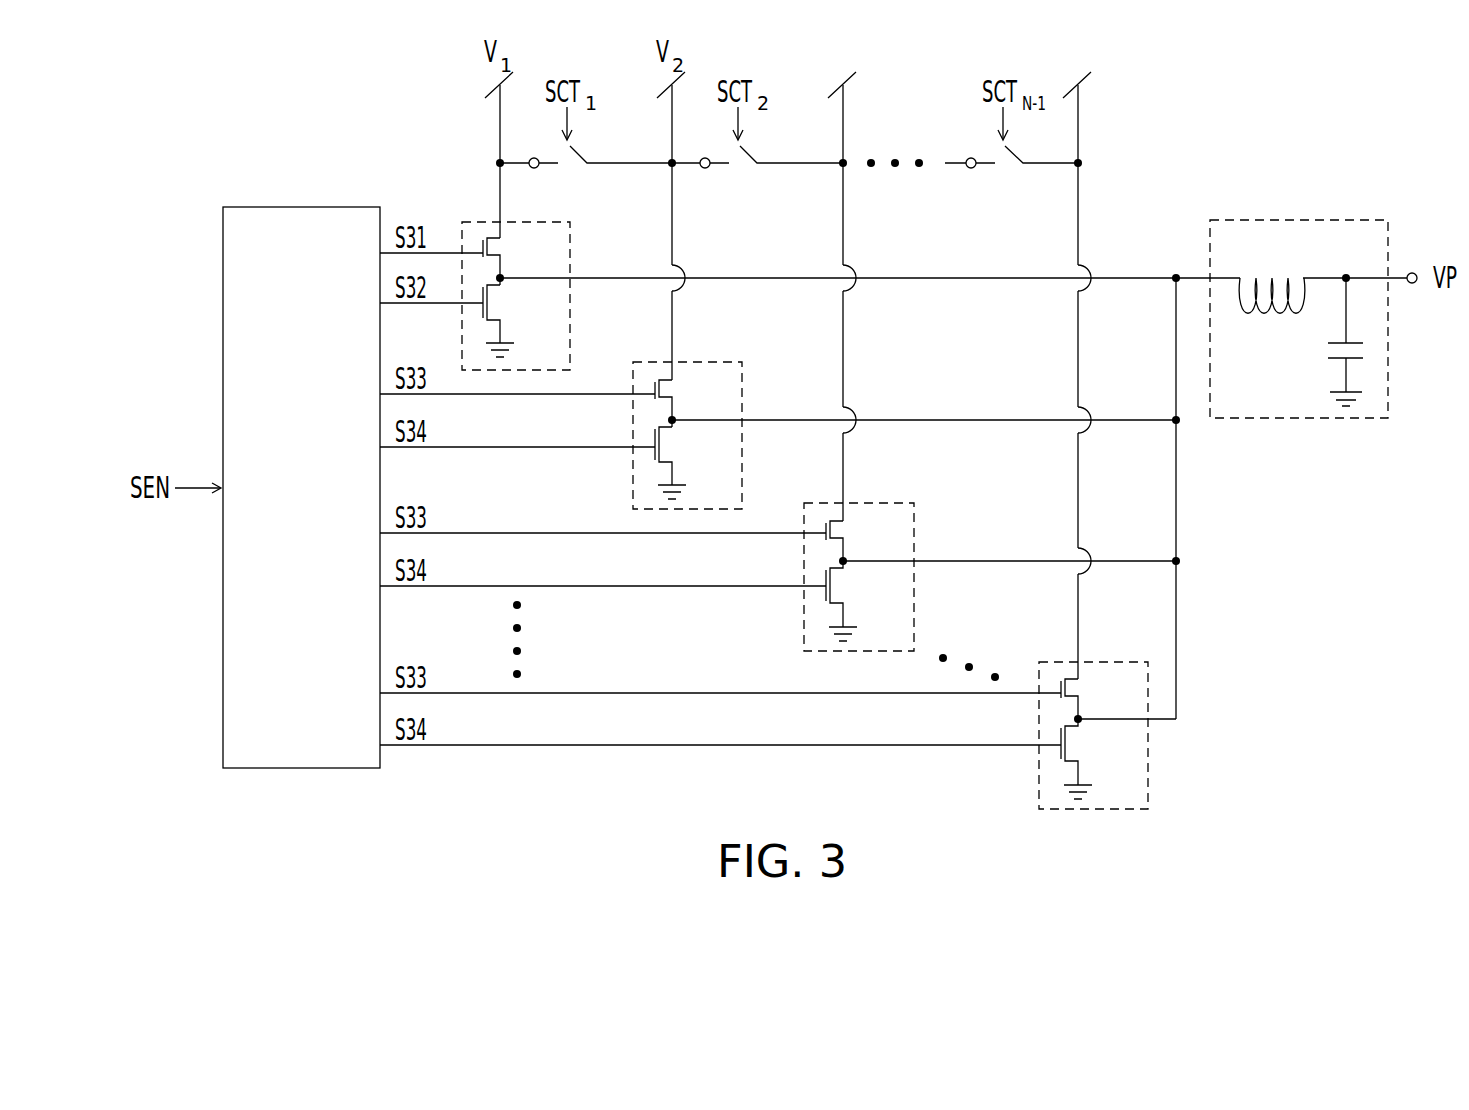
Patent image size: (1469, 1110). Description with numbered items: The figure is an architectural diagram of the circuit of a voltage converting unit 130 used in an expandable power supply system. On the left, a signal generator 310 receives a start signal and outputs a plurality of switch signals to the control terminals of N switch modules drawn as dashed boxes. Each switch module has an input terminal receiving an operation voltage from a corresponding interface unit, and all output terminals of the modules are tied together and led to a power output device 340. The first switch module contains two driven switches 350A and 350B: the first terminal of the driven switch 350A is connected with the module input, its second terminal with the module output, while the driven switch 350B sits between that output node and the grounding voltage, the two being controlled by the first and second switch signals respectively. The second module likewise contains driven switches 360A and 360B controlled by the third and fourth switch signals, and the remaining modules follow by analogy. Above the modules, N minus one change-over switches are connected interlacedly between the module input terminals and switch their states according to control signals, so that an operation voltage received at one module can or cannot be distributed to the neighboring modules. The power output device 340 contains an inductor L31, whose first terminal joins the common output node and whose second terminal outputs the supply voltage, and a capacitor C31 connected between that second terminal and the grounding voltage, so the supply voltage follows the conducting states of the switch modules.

The voltage converting unit 130 is at (1238, 775).
The signal generator 310 is at (300, 770).
The power output device 340 is at (1299, 295).
The driven switch 350A is at (520, 261).
The driven switch 350B is at (520, 321).
The driven switch 360A is at (691, 403).
The driven switch 360B is at (691, 463).
The inductor L31 is at (1272, 276).
The capacitor C31 is at (1325, 342).